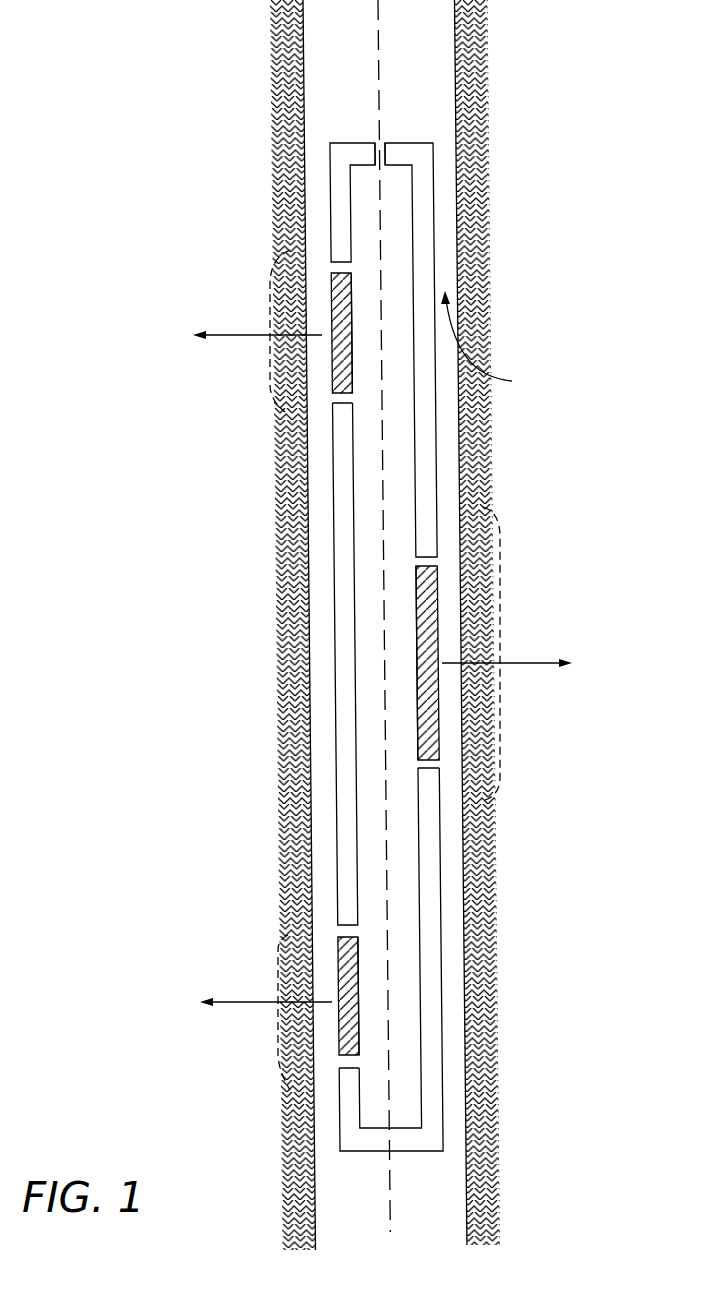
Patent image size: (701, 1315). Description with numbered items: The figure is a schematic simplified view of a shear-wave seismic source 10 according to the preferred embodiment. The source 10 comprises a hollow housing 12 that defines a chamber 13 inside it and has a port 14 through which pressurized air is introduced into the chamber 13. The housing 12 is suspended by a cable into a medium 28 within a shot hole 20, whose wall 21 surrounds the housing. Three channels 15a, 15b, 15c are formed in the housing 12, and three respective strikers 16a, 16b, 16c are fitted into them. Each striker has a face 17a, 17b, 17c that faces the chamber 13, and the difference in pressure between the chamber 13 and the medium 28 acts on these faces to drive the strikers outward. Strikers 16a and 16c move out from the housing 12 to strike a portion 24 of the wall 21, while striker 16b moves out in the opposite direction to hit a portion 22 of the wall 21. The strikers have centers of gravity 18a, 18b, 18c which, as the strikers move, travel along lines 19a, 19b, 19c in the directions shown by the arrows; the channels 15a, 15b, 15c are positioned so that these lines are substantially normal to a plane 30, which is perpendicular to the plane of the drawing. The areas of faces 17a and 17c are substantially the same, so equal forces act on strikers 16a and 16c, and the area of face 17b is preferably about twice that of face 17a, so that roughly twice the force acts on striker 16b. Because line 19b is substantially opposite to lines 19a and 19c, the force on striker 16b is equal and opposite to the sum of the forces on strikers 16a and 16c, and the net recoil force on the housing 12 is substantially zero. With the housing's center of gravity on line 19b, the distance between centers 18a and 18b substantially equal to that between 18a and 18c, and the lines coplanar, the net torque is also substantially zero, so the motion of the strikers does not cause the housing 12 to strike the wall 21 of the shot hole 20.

The shear-wave seismic source 10 is at (432, 130).
The housing 12 is at (425, 485).
The chamber 13 is at (398, 527).
The port 14 is at (375, 138).
The channel 15a is at (353, 400).
The channel 15b is at (415, 767).
The channel 15c is at (362, 1063).
The striker 16a is at (347, 288).
The striker 16b is at (425, 582).
The striker 16c is at (360, 955).
The face 17a is at (353, 302).
The face 17b is at (415, 613).
The face 17c is at (362, 973).
The center of gravity 18a is at (383, 332).
The center of gravity 18b is at (386, 662).
The center of gravity 18c is at (389, 996).
The line 19a is at (244, 340).
The line 19b is at (522, 665).
The line 19c is at (249, 1003).
The shot hole 20 is at (362, 38).
The wall 21 is at (300, 88).
The portion of the wall 22 is at (483, 653).
The portion of the wall 24 is at (289, 670).
The medium 28 is at (492, 342).
The plane 30 is at (389, 633).